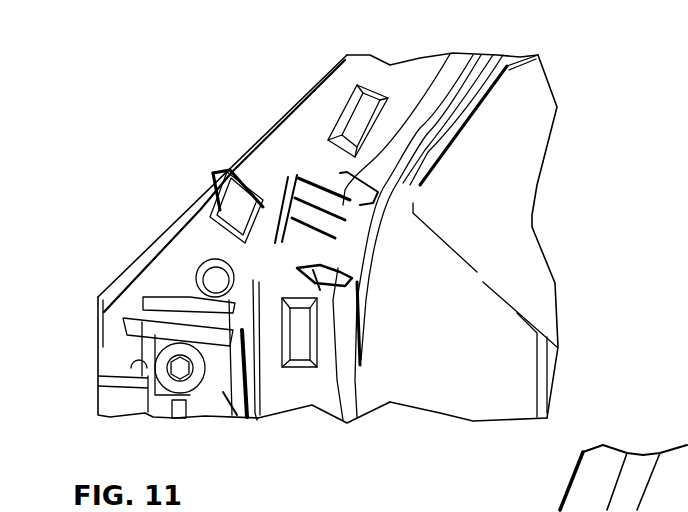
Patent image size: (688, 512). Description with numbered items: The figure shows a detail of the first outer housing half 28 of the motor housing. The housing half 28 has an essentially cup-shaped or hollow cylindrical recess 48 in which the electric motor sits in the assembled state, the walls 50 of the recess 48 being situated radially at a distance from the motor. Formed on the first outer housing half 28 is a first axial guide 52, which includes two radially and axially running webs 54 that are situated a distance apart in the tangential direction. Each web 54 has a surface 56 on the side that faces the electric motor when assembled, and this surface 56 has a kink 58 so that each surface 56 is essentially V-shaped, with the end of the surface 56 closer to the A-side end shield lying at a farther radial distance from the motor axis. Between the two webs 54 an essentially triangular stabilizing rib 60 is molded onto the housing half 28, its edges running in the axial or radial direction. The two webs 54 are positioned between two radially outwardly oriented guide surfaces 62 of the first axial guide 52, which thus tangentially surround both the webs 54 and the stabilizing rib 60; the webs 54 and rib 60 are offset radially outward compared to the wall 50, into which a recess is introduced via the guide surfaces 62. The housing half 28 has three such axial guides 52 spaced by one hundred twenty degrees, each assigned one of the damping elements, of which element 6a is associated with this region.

The vehicle body panel 6a is at (500, 508).
The first outer housing half 28 is at (503, 335).
The cup-shaped recess 48 is at (437, 373).
The wall 50 is at (350, 366).
The first axial guide 52 is at (385, 238).
The web 54 is at (320, 178).
The surface 56 is at (340, 205).
The kink 58 is at (310, 253).
The stabilizing rib 60 is at (322, 245).
The guide surface 62 is at (341, 178).